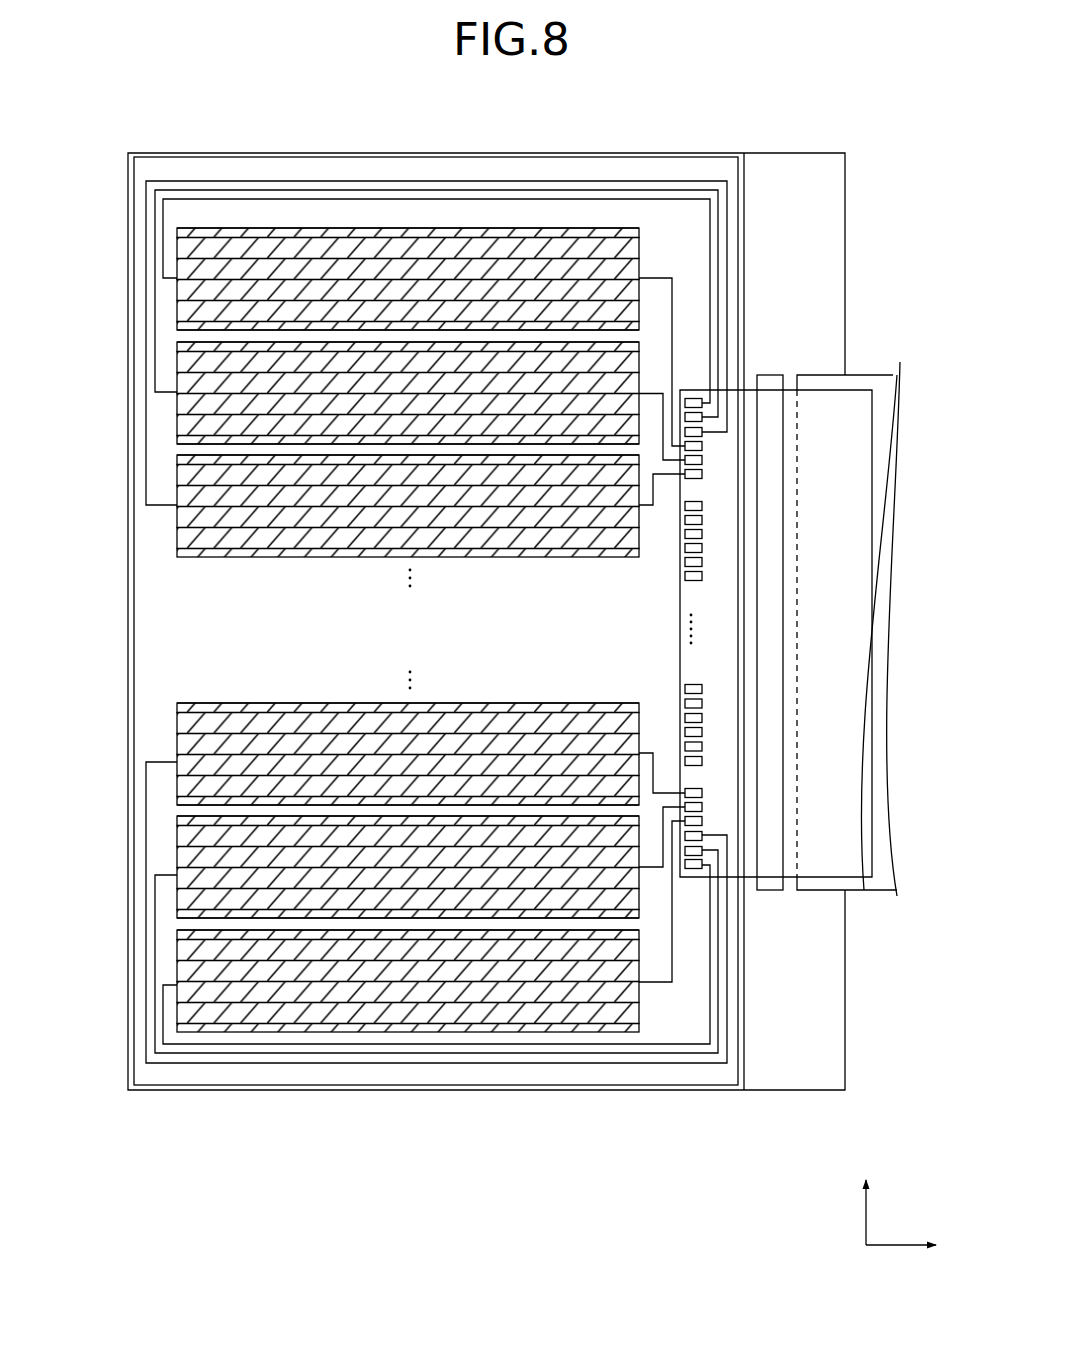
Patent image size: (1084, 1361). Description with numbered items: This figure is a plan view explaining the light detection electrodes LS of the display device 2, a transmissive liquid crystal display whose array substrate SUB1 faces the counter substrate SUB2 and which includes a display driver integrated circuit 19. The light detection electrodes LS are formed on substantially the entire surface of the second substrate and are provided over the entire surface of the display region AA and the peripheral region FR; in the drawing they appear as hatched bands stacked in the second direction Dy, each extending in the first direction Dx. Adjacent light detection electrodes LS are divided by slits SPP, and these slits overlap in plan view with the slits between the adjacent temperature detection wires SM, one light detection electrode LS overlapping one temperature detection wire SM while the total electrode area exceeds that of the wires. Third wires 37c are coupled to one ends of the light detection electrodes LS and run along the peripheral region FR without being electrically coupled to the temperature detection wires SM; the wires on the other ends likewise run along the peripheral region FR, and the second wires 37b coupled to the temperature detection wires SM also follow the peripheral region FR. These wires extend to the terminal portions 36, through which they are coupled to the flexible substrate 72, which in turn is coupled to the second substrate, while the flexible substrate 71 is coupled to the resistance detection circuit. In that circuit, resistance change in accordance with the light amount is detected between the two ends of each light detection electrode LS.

The display device 2 is at (794, 150).
The display driver integrated circuit 19 is at (770, 402).
The terminal portions 36 is at (692, 500).
The second wires 37b is at (672, 305).
The third wires 37c is at (163, 232).
The flexible substrate 71 is at (858, 863).
The flexible substrate 72 is at (858, 620).
The display region AA is at (445, 565).
The peripheral region FR is at (406, 178).
The light detection electrodes LS is at (200, 292).
The temperature detection wires SM is at (590, 231).
The slits SPP is at (208, 335).
The array substrate SUB1 is at (788, 1094).
The counter substrate SUB2 is at (204, 1093).
The first direction Dx is at (901, 1274).
The second direction Dy is at (862, 1216).